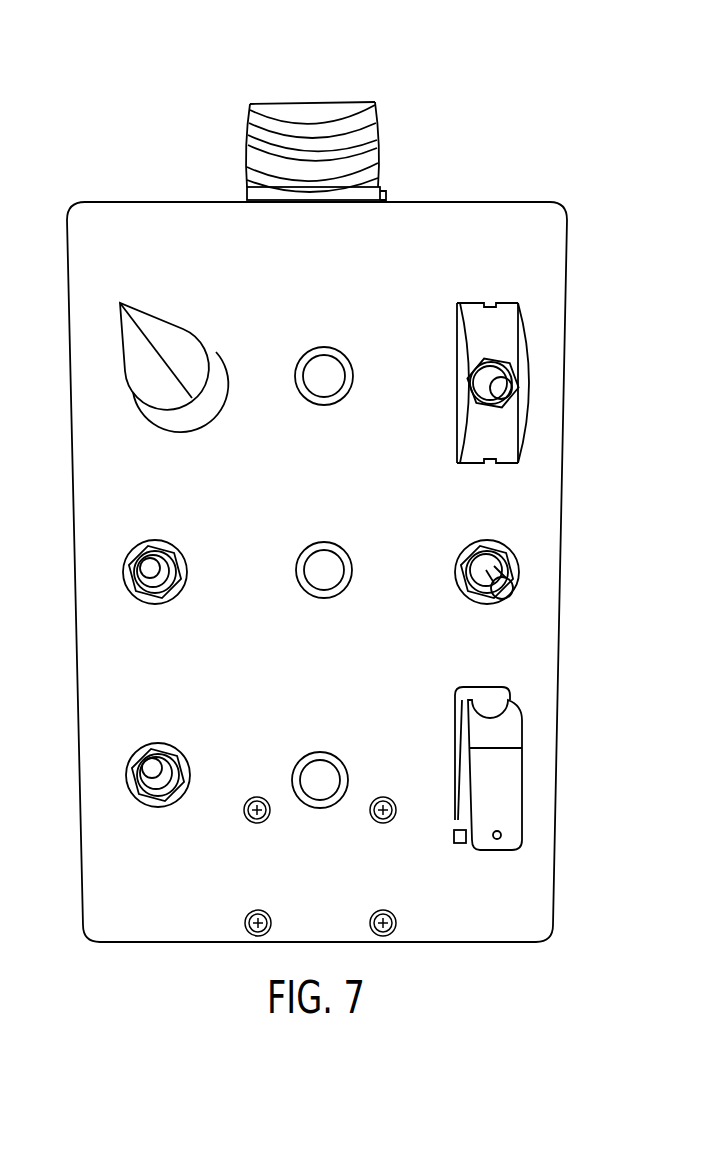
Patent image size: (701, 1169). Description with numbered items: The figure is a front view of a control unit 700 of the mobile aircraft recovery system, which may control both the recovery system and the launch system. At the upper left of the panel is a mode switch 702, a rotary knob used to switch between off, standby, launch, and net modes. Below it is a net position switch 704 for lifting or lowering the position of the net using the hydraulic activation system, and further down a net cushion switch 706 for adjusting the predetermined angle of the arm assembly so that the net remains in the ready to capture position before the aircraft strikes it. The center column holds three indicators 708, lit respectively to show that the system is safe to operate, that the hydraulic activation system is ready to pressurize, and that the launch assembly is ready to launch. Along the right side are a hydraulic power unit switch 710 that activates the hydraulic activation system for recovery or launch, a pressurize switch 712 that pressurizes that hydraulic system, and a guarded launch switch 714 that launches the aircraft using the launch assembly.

The control unit 700 is at (551, 84).
The mode switch 702 is at (145, 387).
The net position switch 704 is at (132, 595).
The net cushion switch 706 is at (128, 795).
The indicators 708 is at (345, 394).
The hydraulic power unit (HPU) switch 710 is at (528, 320).
The pressurize switch 712 is at (515, 550).
The launch switch 714 is at (517, 727).